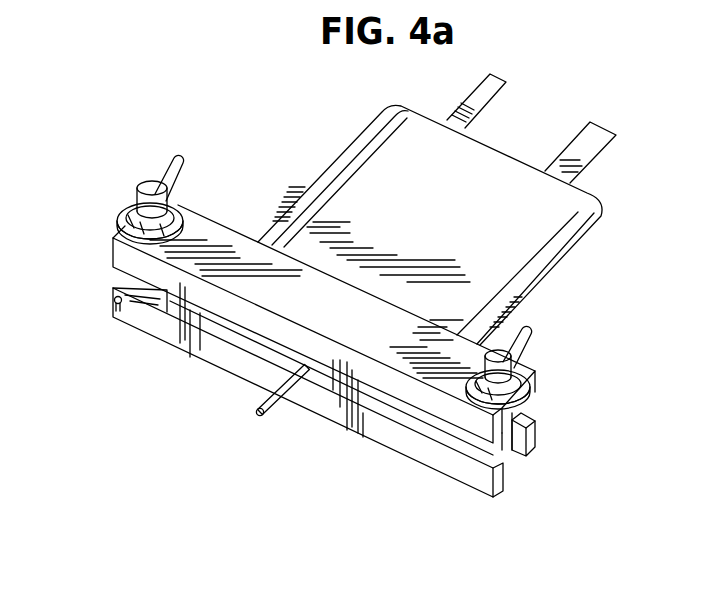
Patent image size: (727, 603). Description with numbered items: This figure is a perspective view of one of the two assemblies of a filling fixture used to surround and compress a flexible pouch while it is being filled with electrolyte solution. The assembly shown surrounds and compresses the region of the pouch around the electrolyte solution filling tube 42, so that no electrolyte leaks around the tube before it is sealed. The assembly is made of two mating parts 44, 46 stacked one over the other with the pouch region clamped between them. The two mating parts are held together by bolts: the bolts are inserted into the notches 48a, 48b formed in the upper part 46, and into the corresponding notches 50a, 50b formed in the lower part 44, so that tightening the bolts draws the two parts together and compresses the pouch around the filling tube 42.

The electrolyte solution filling tube 42 is at (276, 407).
The mating part 44 is at (192, 353).
The mating part 46 is at (233, 243).
The notch 48a is at (542, 410).
The notch 48b is at (120, 218).
The notch 50a is at (530, 492).
The notch 50b is at (117, 278).